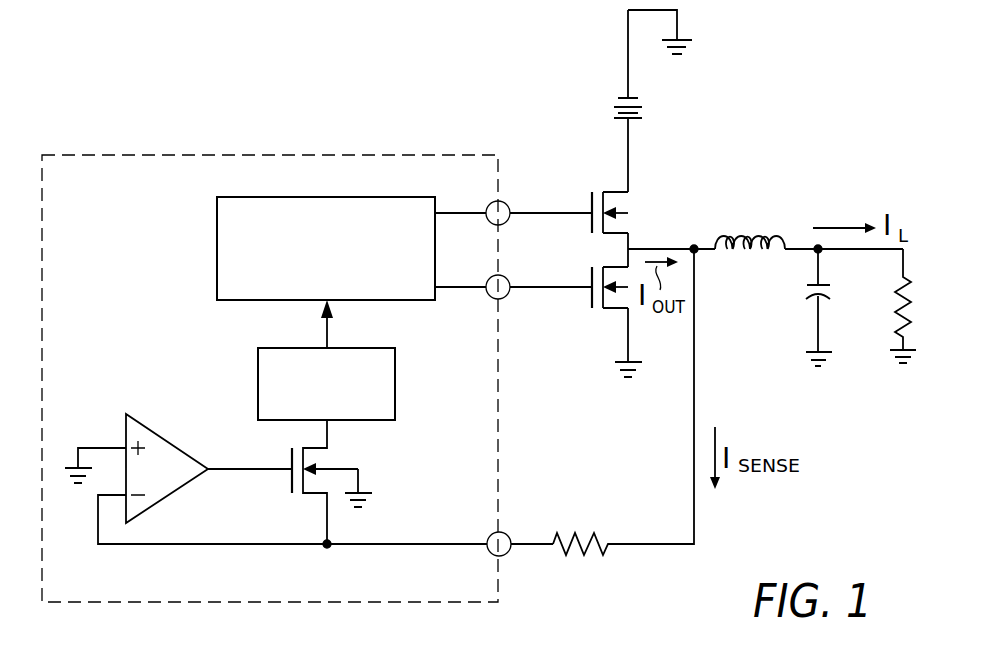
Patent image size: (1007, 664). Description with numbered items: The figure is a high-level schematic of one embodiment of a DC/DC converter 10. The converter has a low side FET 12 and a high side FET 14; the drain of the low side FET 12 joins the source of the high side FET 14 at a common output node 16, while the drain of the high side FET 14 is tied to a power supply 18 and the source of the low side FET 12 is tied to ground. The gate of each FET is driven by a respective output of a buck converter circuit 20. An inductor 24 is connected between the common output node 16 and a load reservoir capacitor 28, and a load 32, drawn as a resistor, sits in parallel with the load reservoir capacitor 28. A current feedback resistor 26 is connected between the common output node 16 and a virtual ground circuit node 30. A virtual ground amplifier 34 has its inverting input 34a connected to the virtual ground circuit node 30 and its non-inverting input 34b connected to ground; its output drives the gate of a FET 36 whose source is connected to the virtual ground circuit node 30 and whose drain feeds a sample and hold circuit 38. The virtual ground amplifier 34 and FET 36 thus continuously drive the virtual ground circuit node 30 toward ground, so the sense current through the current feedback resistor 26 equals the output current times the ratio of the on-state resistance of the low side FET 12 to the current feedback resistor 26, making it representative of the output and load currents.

The DC/DC converter 10 is at (366, 88).
The low side field effect transistor 12 is at (613, 318).
The high side field effect transistor 14 is at (617, 188).
The common output node 16 is at (694, 245).
The power supply 18 is at (644, 107).
The buck converter circuit 20 is at (238, 303).
The inductor 24 is at (745, 233).
The current feedback resistor 26 is at (578, 553).
The load reservoir capacitor 28 is at (803, 293).
The virtual ground circuit node 30 is at (493, 556).
The load 32 is at (900, 294).
The virtual ground amplifier 34 is at (163, 432).
The inverting input 34a is at (98, 516).
The non-inverting input 34b is at (88, 446).
The FET 36 is at (323, 456).
The sample and hold circuit 38 is at (270, 423).